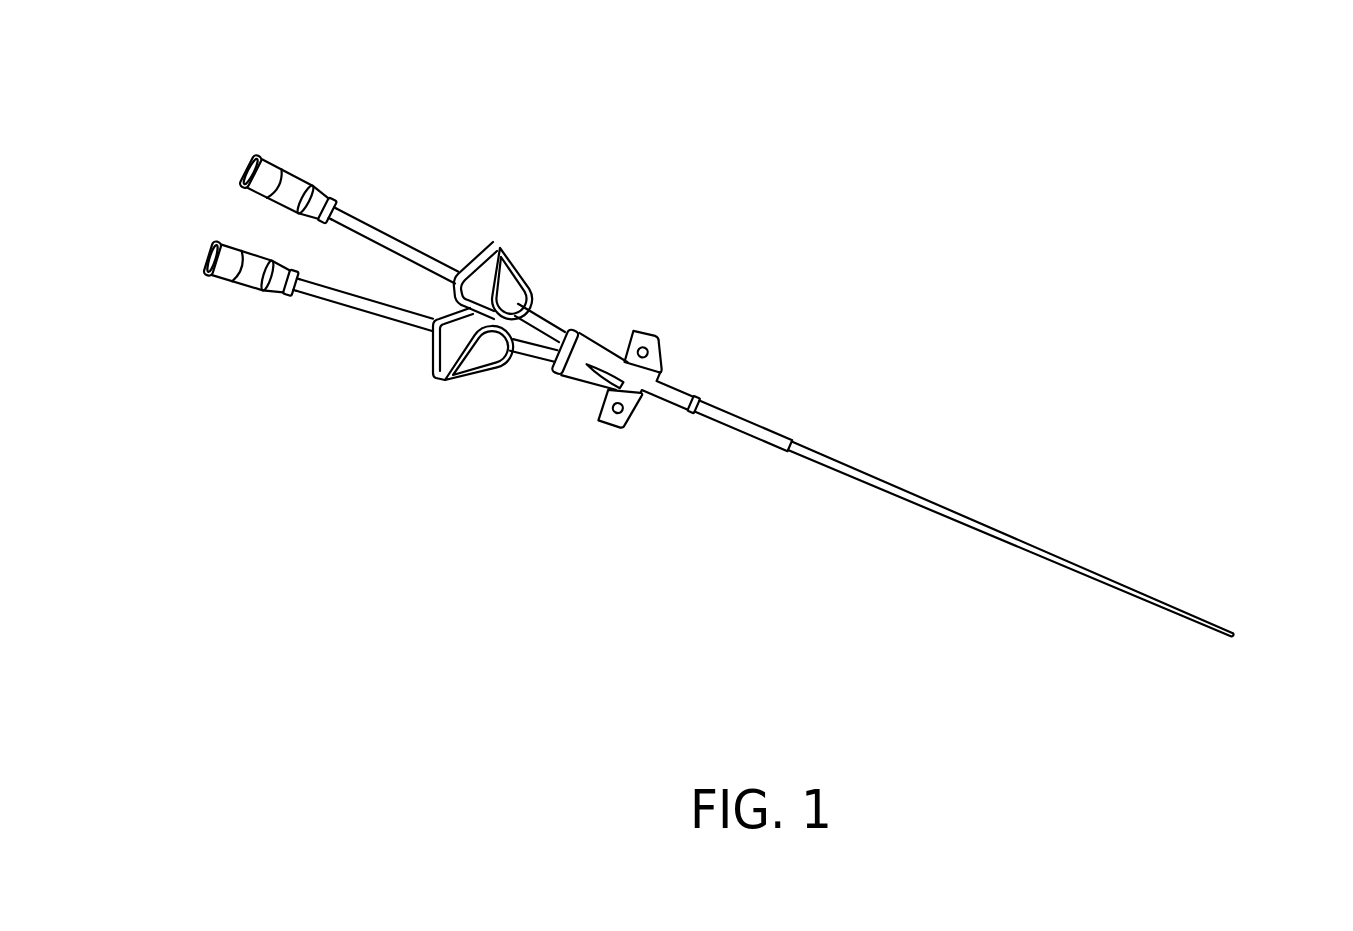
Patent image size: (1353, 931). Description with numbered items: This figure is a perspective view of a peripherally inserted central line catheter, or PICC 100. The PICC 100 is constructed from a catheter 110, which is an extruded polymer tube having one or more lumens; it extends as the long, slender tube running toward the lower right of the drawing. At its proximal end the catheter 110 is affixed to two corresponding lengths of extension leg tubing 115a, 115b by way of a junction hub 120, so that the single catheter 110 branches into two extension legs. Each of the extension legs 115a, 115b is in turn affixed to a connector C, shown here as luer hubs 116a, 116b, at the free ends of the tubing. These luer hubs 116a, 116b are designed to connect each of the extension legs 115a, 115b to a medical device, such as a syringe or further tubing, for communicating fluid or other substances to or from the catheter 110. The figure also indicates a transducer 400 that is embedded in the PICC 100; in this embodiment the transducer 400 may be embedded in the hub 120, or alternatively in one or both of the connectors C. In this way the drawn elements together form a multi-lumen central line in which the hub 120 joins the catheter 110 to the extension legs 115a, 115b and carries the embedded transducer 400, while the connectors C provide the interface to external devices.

The peripherally inserted central line catheter (PICC) 100 is at (908, 323).
The connectors C is at (277, 116).
The catheter 110 is at (980, 520).
The transducer 400 is at (577, 337).
The junction hub 120 is at (580, 373).
The extension leg tubing 115a is at (370, 305).
The extension leg tubing 115b is at (380, 239).
The luer hub 116a is at (250, 276).
The luer hub 116b is at (289, 173).